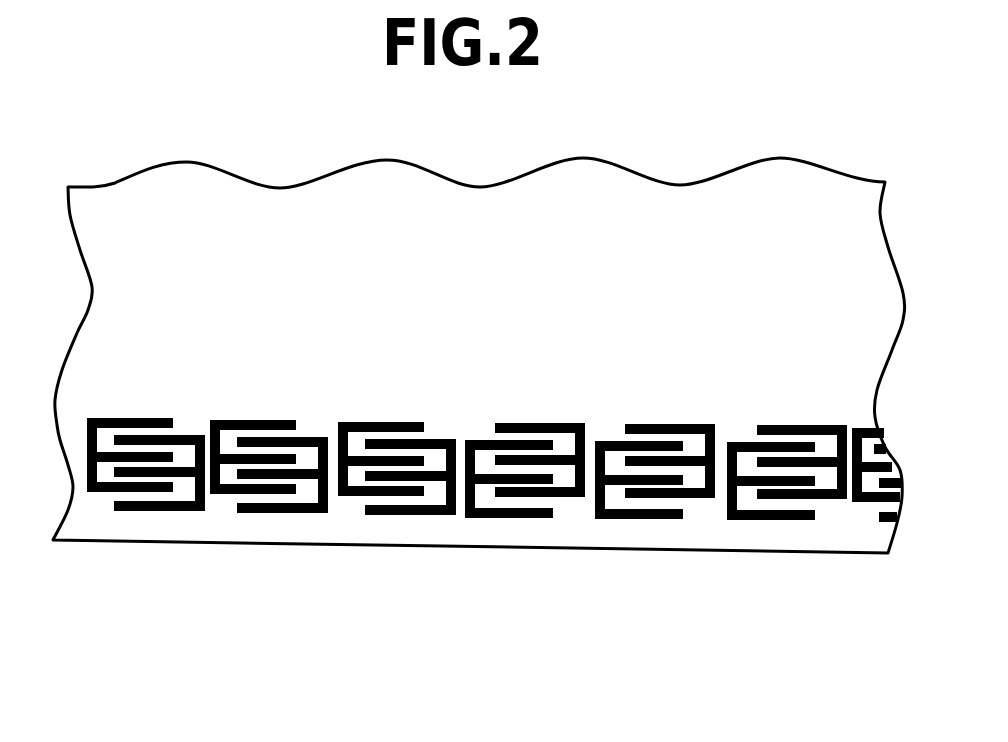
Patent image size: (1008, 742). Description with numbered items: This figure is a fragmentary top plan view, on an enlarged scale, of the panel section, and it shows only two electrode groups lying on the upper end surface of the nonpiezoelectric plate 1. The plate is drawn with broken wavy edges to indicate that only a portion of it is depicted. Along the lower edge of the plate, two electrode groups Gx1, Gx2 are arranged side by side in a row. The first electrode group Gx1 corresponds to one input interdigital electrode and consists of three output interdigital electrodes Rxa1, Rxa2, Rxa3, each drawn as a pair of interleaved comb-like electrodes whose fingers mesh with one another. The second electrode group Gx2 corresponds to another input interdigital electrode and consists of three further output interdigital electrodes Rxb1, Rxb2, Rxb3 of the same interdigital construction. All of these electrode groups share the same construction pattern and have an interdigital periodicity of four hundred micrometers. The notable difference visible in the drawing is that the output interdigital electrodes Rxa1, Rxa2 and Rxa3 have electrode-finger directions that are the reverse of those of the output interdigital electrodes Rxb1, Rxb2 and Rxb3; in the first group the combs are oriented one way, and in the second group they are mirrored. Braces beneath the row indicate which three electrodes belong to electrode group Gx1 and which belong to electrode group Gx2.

The nonpiezoelectric plate 1 is at (685, 205).
The output interdigital electrode Rxa1 is at (143, 512).
The output interdigital electrode Rxa2 is at (278, 514).
The output interdigital electrode Rxa3 is at (397, 533).
The output interdigital electrode Rxb1 is at (522, 518).
The output interdigital electrode Rxb2 is at (647, 520).
The output interdigital electrode Rxb3 is at (787, 538).
The electrode group Gx1 is at (271, 573).
The electrode group Gx2 is at (656, 577).